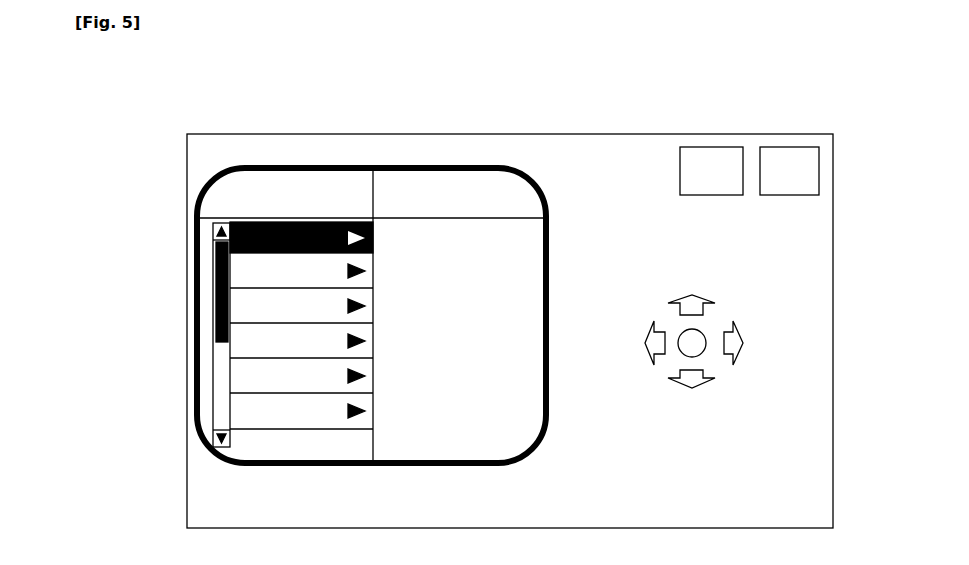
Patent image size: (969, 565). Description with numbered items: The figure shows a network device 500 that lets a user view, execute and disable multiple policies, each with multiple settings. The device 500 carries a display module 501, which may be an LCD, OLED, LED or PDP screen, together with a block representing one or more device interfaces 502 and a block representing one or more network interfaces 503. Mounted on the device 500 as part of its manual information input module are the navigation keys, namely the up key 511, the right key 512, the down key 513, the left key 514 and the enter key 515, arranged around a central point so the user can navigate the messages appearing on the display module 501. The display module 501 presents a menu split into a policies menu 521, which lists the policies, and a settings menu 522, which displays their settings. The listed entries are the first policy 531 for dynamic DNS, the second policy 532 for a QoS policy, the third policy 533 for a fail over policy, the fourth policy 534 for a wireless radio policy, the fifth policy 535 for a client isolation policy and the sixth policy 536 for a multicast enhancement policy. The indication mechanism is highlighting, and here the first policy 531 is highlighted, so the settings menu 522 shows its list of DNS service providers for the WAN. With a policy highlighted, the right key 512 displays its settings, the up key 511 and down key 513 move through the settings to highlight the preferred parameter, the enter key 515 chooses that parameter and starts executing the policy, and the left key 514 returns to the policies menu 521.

The device 500 is at (537, 134).
The display module 501 is at (310, 170).
The device interface 502 is at (803, 196).
The network interface 503 is at (713, 196).
The up key 511 is at (688, 293).
The right key 512 is at (747, 340).
The down key 513 is at (695, 395).
The left key 514 is at (642, 336).
The enter key 515 is at (682, 330).
The policies menu 521 is at (235, 203).
The settings menu 522 is at (445, 172).
The Policy 1 531 is at (250, 222).
The Policy 2 532 is at (237, 268).
The Policy 3 533 is at (237, 305).
The Policy 4 534 is at (237, 342).
The Policy 5 535 is at (237, 377).
The Policy 6 536 is at (237, 412).